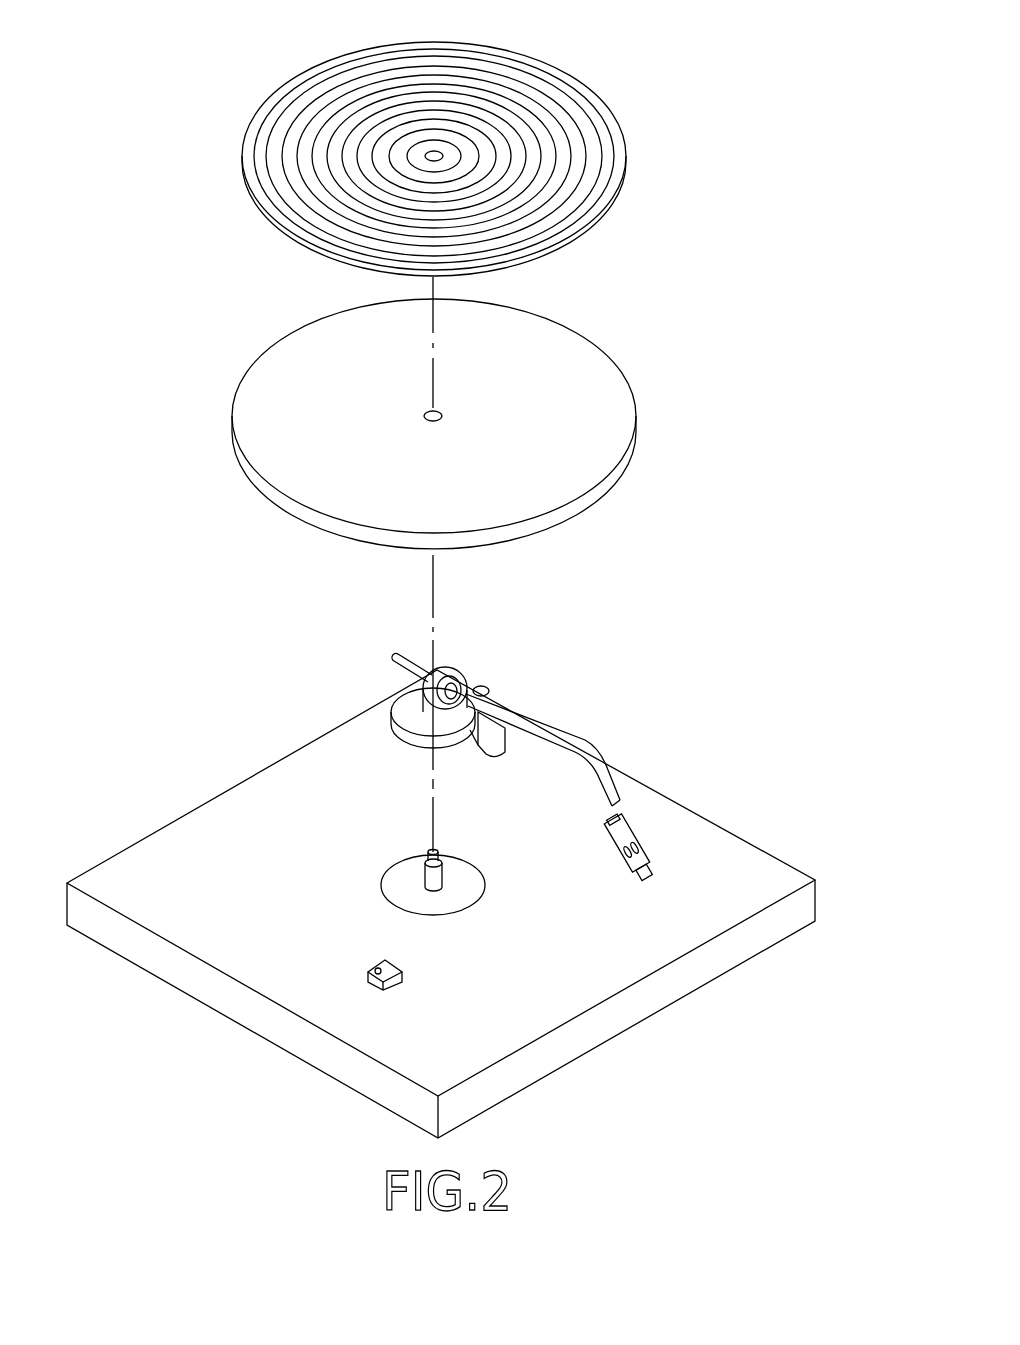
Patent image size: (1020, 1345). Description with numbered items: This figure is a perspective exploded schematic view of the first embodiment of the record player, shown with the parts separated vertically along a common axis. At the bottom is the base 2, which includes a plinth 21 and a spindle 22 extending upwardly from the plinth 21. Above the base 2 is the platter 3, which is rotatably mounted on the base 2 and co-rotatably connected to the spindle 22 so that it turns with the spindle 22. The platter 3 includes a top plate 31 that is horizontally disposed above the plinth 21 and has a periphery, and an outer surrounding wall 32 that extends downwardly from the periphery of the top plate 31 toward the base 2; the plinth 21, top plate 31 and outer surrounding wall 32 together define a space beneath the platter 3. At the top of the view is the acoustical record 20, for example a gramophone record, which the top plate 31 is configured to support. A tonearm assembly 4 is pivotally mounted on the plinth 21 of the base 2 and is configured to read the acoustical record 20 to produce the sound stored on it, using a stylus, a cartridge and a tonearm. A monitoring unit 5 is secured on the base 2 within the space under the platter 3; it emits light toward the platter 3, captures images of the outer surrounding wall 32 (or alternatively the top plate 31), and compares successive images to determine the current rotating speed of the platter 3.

The base 2 is at (441, 904).
The acoustical record 20 is at (548, 55).
The plinth 21 is at (653, 785).
The spindle 22 is at (430, 858).
The platter 3 is at (473, 413).
The top plate 31 is at (541, 340).
The outer surrounding wall 32 is at (617, 470).
The tonearm assembly 4 is at (533, 738).
The monitoring unit 5 is at (358, 985).